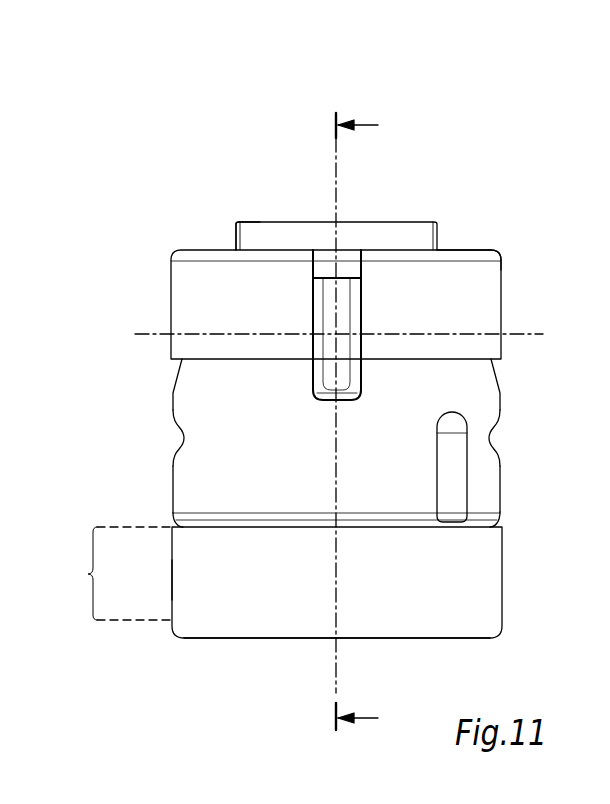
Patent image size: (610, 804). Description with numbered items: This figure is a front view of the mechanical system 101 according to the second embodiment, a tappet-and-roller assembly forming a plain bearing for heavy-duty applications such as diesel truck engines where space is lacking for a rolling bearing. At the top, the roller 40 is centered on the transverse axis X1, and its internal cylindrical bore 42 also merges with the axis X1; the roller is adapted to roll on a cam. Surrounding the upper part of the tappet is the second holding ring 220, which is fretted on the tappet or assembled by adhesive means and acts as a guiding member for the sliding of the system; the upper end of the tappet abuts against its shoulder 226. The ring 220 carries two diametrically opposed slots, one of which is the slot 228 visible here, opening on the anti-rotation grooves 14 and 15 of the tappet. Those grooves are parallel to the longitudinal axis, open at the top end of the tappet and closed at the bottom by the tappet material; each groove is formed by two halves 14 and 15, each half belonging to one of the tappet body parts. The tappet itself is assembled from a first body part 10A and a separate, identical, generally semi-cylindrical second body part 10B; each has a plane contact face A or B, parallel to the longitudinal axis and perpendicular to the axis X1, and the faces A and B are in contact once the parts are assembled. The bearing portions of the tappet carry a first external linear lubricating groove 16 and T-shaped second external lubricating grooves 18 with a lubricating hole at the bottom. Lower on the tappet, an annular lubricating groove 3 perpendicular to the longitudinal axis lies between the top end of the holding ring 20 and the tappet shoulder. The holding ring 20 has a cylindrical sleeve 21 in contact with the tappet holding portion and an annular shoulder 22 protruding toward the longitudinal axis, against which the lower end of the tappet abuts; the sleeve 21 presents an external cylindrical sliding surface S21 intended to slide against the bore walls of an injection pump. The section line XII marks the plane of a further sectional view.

The mechanical system 101 is at (324, 391).
The roller 40 is at (403, 240).
The internal cylindrical bore 42 is at (276, 220).
The second holding ring 220 is at (466, 310).
The shoulder 226 is at (466, 255).
The slot 228 is at (326, 257).
The anti-rotation groove 14 is at (318, 362).
The anti-rotation groove 15 is at (352, 358).
The second body part 10B is at (487, 382).
The second external lubricating groove 18 is at (171, 432).
The first body part 10A is at (191, 492).
The first external lubricating groove 16 is at (452, 468).
The lubricating groove 3 is at (504, 521).
The holding ring 20 is at (482, 568).
The annular shoulder 22 is at (428, 627).
The sleeve 21 is at (113, 573).
The external cylindrical sliding surface S21 is at (229, 573).
The plane contact face A is at (340, 483).
The plane contact face B is at (333, 497).
The transverse axis X1 is at (327, 324).
The section XII is at (371, 422).